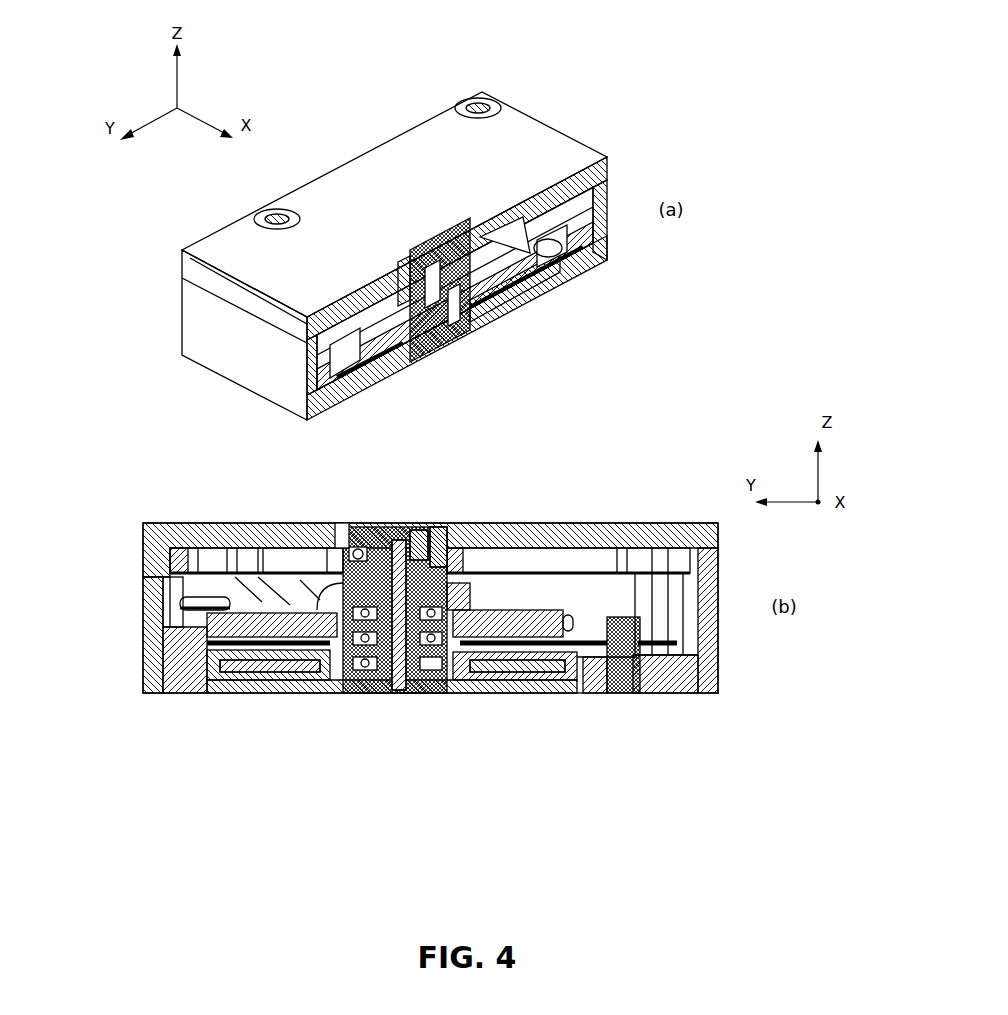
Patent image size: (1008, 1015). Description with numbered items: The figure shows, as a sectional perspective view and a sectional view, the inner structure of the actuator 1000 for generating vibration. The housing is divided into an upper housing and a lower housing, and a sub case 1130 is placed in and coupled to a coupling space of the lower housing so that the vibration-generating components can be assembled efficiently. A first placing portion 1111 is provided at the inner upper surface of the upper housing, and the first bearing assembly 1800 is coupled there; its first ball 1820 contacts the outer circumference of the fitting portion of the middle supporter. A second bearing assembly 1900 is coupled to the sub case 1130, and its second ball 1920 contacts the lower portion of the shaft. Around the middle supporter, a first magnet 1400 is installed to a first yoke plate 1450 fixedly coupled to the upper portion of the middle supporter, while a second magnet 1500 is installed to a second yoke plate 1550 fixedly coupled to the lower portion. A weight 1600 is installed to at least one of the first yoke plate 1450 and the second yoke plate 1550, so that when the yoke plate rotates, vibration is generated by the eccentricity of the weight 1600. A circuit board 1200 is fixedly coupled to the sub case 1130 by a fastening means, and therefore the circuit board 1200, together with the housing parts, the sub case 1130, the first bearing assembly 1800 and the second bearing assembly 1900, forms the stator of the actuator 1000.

The actuator 1000 is at (614, 98).
The first placing portion 1111 is at (338, 523).
The sub case 1130 is at (230, 697).
The circuit board 1200 is at (572, 697).
The first magnet 1400 is at (500, 697).
The first yoke plate 1450 is at (537, 610).
The second magnet 1500 is at (293, 697).
The second yoke plate 1550 is at (262, 697).
The weight 1600 is at (240, 523).
The first bearing assembly 1800 is at (507, 522).
The first ball 1820 is at (438, 522).
The second bearing assembly 1900 is at (378, 695).
The second ball 1920 is at (430, 697).